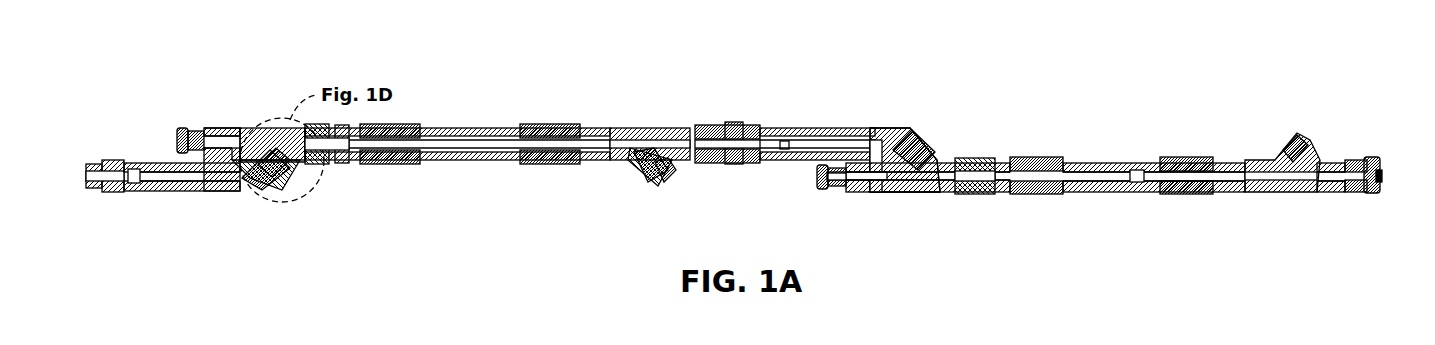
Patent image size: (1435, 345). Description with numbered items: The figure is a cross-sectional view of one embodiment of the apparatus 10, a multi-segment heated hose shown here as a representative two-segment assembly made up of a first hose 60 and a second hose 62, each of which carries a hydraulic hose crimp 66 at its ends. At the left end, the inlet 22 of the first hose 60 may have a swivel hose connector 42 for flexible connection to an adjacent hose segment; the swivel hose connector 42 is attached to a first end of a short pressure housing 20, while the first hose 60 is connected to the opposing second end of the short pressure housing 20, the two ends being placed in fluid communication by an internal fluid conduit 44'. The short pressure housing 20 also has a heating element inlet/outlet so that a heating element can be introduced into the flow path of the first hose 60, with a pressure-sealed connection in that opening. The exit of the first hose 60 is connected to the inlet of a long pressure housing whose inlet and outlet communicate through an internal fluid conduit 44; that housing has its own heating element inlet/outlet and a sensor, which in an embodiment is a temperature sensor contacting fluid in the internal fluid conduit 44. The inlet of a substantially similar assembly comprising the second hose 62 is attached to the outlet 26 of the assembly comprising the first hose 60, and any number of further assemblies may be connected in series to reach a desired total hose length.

The apparatus 10 is at (756, 58).
The short pressure housing 20 is at (640, 128).
The hose inlet 22 is at (1382, 170).
The hose outlet 26 is at (104, 196).
The swivel hose connector 42 is at (718, 128).
The internal fluid conduit 44 is at (817, 119).
The internal fluid conduit 44' is at (1314, 205).
The first hose 60 is at (1114, 194).
The second hose 62 is at (478, 162).
The hydraulic hose crimp 66 is at (388, 164).